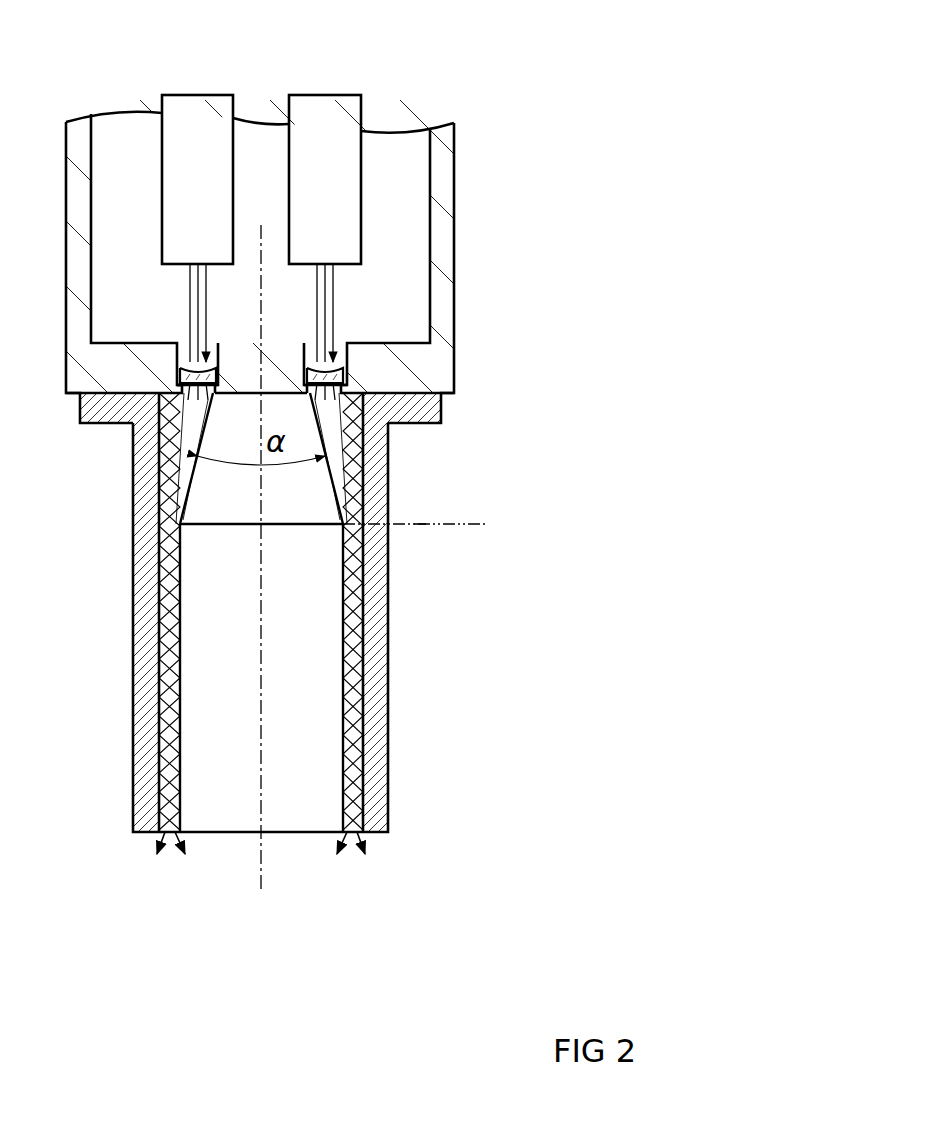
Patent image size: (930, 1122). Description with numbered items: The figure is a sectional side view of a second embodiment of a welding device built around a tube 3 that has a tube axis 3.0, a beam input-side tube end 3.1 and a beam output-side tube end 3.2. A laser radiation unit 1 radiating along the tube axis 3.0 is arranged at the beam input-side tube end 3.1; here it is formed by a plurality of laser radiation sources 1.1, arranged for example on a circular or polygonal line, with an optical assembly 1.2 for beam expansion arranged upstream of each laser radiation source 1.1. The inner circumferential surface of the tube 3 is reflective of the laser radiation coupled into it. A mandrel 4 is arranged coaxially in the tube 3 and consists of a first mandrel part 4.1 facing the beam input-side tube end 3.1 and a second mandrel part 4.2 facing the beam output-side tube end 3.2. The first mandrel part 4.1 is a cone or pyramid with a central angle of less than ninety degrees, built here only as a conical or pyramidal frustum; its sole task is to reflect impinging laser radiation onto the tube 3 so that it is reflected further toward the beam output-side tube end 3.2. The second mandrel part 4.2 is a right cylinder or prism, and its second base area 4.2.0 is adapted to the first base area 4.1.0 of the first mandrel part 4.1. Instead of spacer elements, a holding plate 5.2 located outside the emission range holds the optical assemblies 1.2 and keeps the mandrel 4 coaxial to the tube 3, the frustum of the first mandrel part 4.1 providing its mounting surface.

The laser radiation unit 1 is at (404, 205).
The laser radiation source 1.1 is at (218, 112).
The optical assembly 1.2 is at (222, 352).
The holding plate 5.2 is at (380, 368).
The beam input-side tube end 3.1 is at (357, 407).
The tube 3 is at (323, 609).
The beam output-side tube end 3.2 is at (362, 836).
The tube axis 3.0 is at (260, 865).
The mandrel 4 is at (419, 612).
The first mandrel part 4.1 is at (322, 460).
The second mandrel part 4.2 is at (330, 705).
The second base area 4.2.0 is at (441, 522).
The first base area 4.1.0 is at (421, 527).